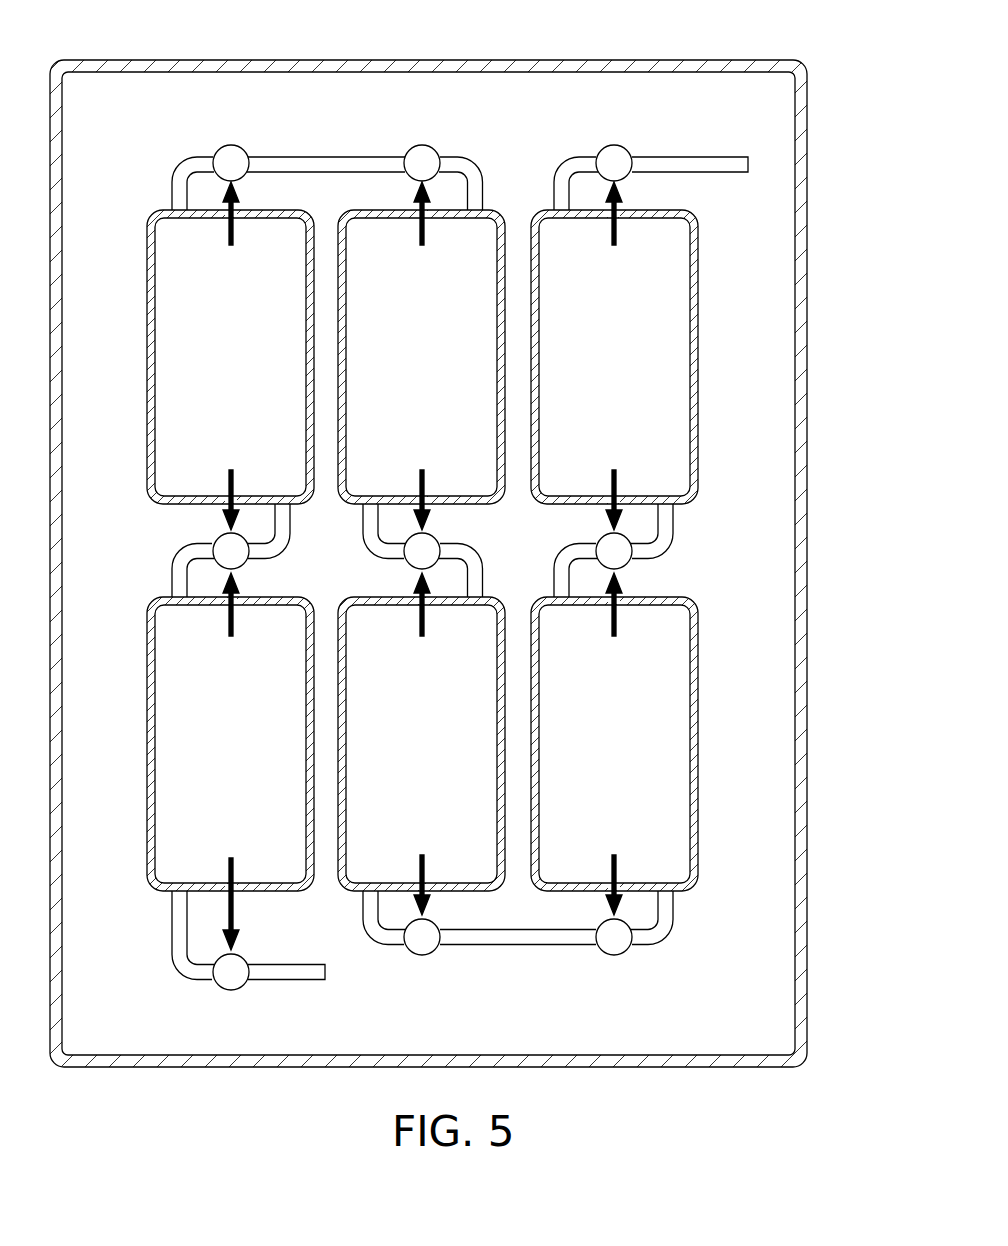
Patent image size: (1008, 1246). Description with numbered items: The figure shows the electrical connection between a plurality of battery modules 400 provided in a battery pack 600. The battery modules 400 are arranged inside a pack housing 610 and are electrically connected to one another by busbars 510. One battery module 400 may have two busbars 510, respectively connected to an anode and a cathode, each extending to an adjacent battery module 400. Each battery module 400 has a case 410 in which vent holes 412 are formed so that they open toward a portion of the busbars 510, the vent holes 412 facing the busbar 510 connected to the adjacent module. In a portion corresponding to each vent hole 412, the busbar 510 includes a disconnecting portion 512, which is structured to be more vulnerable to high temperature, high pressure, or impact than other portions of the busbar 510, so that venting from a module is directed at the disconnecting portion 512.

The battery pack 600 is at (452, 34).
The pack housing 610 is at (804, 136).
The battery module 400 is at (423, 550).
The case 410 is at (151, 257).
The vent hole 412 is at (225, 215).
The busbar 510 is at (175, 195).
The disconnecting portion 512 is at (231, 146).